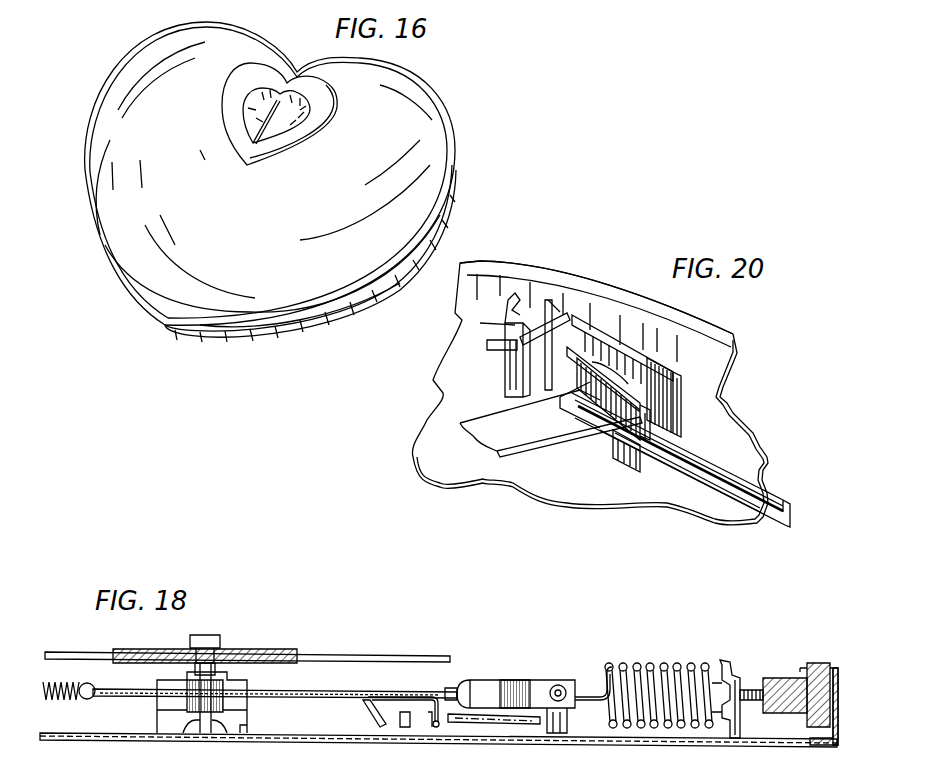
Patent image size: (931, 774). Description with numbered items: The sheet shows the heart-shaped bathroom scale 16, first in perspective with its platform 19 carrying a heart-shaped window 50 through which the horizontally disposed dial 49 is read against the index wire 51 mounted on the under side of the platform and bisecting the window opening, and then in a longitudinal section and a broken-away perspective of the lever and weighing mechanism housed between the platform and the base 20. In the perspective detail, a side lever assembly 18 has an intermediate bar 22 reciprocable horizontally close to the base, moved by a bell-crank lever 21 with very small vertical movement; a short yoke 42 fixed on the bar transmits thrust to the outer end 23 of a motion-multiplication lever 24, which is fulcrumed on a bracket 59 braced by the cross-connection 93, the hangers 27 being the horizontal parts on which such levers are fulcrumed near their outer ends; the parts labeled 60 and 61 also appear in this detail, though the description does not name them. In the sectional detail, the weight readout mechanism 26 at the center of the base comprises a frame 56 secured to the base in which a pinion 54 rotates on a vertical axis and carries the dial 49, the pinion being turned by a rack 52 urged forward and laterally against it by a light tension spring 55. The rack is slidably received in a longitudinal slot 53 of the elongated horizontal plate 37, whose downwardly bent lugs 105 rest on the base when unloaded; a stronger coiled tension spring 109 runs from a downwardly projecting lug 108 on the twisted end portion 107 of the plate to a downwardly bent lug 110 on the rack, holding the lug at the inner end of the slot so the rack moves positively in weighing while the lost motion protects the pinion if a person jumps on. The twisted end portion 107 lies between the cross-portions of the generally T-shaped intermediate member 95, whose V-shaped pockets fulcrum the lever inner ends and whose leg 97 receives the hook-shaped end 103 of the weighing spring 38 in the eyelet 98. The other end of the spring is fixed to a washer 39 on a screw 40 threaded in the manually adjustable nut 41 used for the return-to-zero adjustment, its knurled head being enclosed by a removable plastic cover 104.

In FIG. 16, the scale 16 is at (445, 153).
In FIG. 20, the scale 16 is at (722, 330).
In FIG. 18, the scale 16 is at (512, 742).
In FIG. 16, the platform 19 is at (225, 318).
In FIG. 20, the base 20 is at (512, 268).
In FIG. 18, the base 20 is at (318, 742).
In FIG. 16, the window 50 is at (290, 128).
In FIG. 16, the index wire 51 is at (253, 137).
In FIG. 20, the cross-connection of brackets 93 is at (592, 325).
In FIG. 20, the hangers 27 is at (662, 368).
In FIG. 20, the outer ends of motion-multiplication levers 23 is at (608, 362).
In FIG. 20, the side lever assembly 18 is at (683, 476).
In FIG. 20, the intermediate bars 22 is at (750, 518).
In FIG. 20, the yokes 42 is at (585, 415).
In FIG. 20, the block 60 is at (622, 462).
In FIG. 20, the motion-multiplication lever 24 is at (482, 427).
In FIG. 20, the brackets 59 is at (510, 375).
In FIG. 20, the post 61 is at (547, 392).
In FIG. 20, the bell-crank levers 21 is at (500, 318).
In FIG. 18, the dial 49 is at (345, 655).
In FIG. 18, the weight readout mechanism 26 is at (247, 645).
In FIG. 18, the frame 56 is at (248, 682).
In FIG. 18, the pinion 54 is at (190, 697).
In FIG. 18, the rack 52 is at (270, 697).
In FIG. 18, the light tension spring 55 is at (56, 700).
In FIG. 18, the elongated horizontal plate 37 is at (365, 704).
In FIG. 18, the downwardly bent lug 110 is at (433, 712).
In FIG. 18, the twisted elongated end portion of plate 107 is at (457, 690).
In FIG. 18, the T-shaped intermediate member 95 is at (480, 682).
In FIG. 18, the leg of T-shaped member 97 is at (516, 680).
In FIG. 18, the eyelet 98 is at (556, 685).
In FIG. 18, the downwardly projecting lug 108 is at (560, 733).
In FIG. 18, the coiled tension spring 109 is at (470, 724).
In FIG. 18, the downwardly bent lugs 105 is at (384, 728).
In FIG. 18, the longitudinal slot 53 is at (400, 718).
In FIG. 18, the hook-shaped end of weighing spring 103 is at (600, 698).
In FIG. 18, the weighing spring 38 is at (672, 667).
In FIG. 18, the washer 39 is at (736, 732).
In FIG. 18, the screw 40 is at (763, 702).
In FIG. 18, the manually adjustable nut 41 is at (820, 662).
In FIG. 18, the removable plastic cover 104 is at (832, 740).